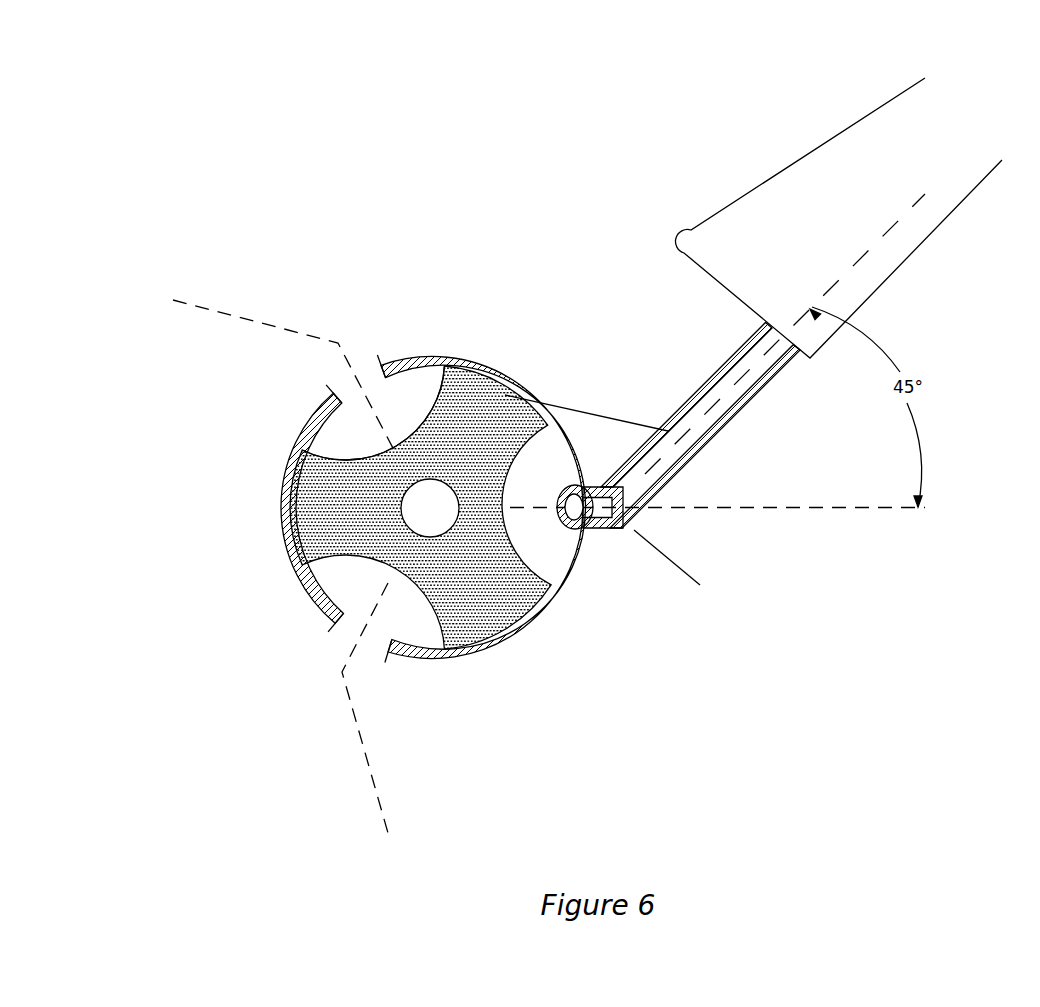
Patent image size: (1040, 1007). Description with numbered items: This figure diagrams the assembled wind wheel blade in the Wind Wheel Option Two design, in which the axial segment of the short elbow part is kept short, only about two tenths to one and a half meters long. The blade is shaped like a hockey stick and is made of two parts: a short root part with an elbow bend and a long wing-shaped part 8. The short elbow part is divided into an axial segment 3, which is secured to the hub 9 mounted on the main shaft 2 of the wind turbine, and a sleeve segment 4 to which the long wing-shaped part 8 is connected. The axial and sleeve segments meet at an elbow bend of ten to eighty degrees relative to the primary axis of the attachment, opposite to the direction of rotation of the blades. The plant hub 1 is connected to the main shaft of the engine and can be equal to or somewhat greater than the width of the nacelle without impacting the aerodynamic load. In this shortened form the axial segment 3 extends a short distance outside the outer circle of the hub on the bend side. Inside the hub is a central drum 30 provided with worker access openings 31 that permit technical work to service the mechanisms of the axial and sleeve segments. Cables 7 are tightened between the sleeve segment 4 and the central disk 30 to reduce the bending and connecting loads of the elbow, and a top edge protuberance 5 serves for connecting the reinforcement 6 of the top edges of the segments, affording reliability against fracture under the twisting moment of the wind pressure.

The plant hub 1 is at (463, 657).
The main shaft 2 is at (432, 508).
The axial segment 3 is at (610, 537).
The sleeve segment 4 is at (747, 412).
The top edge protuberance 5 is at (620, 528).
The reinforcement 6 is at (595, 483).
The cables 7 is at (612, 410).
The long wing-shaped part 8 is at (878, 228).
The hub 9 is at (583, 538).
The central drum 30 is at (490, 417).
The worker access openings 31 is at (410, 398).